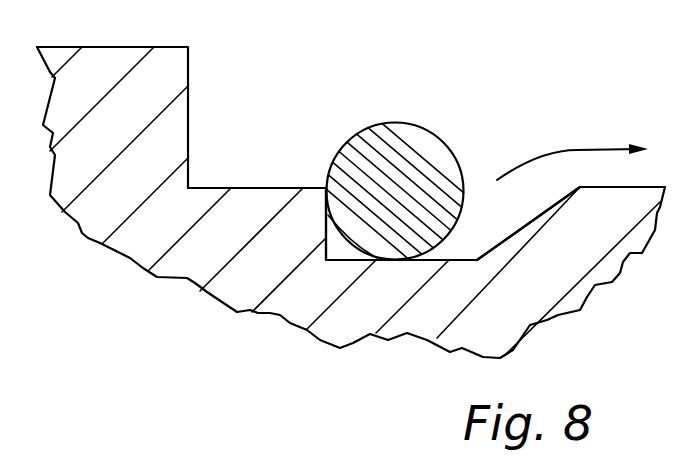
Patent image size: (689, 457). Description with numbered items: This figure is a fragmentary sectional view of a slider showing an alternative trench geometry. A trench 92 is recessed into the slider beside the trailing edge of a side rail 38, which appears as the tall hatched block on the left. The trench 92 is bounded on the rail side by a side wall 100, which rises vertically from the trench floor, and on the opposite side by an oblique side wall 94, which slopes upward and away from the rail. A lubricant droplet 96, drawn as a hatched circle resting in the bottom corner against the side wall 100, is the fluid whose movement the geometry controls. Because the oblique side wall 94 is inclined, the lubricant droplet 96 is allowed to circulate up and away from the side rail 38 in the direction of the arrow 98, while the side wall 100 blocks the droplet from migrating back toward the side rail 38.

The side rail 38 is at (145, 47).
The trench 92 is at (340, 261).
The oblique side wall 94 is at (513, 232).
The lubricant droplet 96 is at (434, 133).
The arrow 98 is at (578, 145).
The side wall 100 is at (326, 224).